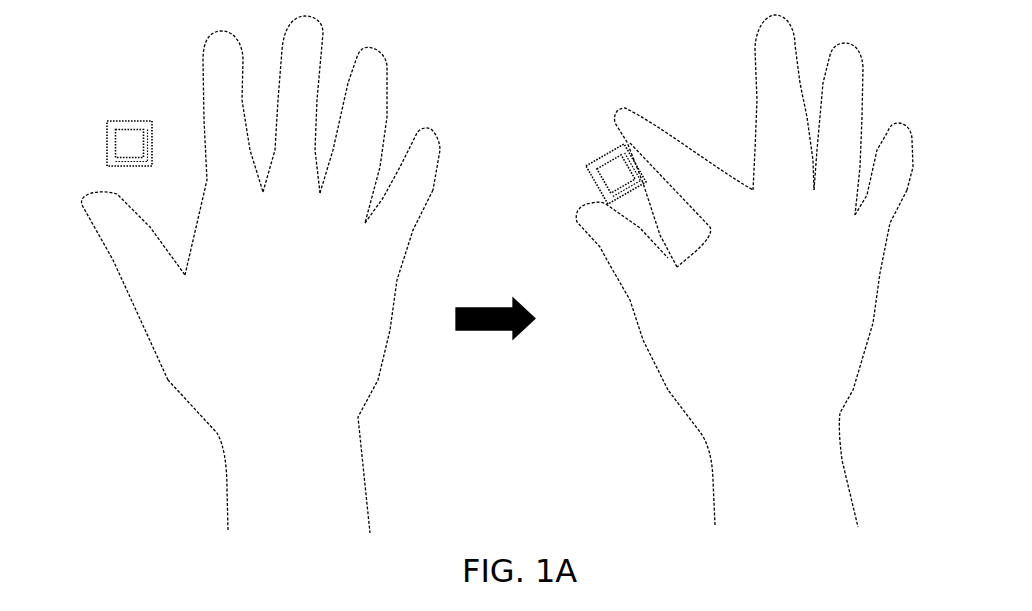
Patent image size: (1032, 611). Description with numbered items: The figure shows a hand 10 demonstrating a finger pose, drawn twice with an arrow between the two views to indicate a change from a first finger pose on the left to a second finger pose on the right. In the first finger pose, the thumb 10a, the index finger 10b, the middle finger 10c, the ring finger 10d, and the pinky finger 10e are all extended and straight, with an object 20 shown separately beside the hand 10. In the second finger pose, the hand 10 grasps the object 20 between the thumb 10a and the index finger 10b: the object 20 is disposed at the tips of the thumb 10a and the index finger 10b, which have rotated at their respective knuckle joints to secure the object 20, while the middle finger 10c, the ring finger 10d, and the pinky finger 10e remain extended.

The hand 10 is at (197, 395).
The thumb 10a is at (127, 258).
The index finger 10b is at (207, 97).
The middle finger 10c is at (300, 37).
The ring finger 10d is at (375, 62).
The pinky finger 10e is at (424, 136).
The object 20 is at (108, 125).